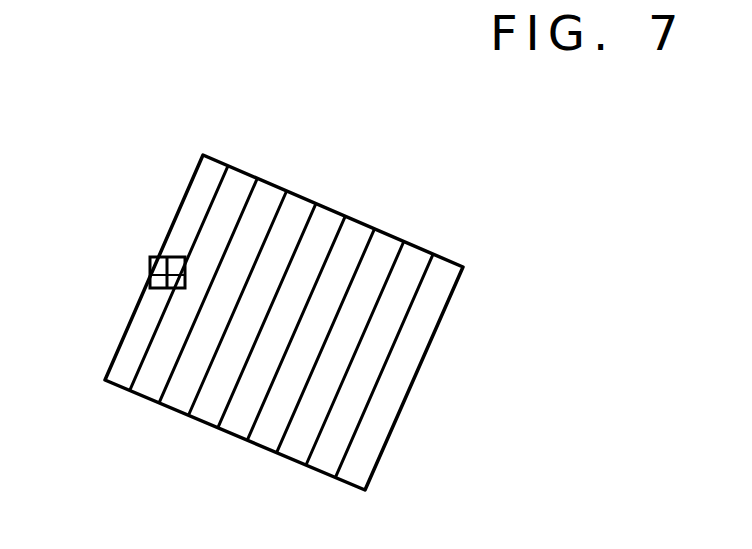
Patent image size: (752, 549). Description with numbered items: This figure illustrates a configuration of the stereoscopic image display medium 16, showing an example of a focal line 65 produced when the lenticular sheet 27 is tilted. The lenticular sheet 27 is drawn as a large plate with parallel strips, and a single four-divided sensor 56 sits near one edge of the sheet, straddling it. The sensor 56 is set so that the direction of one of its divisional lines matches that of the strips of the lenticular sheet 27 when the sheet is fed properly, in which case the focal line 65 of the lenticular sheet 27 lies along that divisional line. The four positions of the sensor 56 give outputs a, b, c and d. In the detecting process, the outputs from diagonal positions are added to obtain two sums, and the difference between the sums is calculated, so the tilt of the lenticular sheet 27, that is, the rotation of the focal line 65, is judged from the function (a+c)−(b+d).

The stereoscopic image display medium 16 is at (546, 210).
The lenticular sheet 27 is at (303, 197).
The sensor 56 is at (150, 287).
The focal line 65 is at (167, 257).
The output a is at (178, 256).
The output b is at (150, 263).
The output c is at (150, 285).
The output d is at (175, 290).